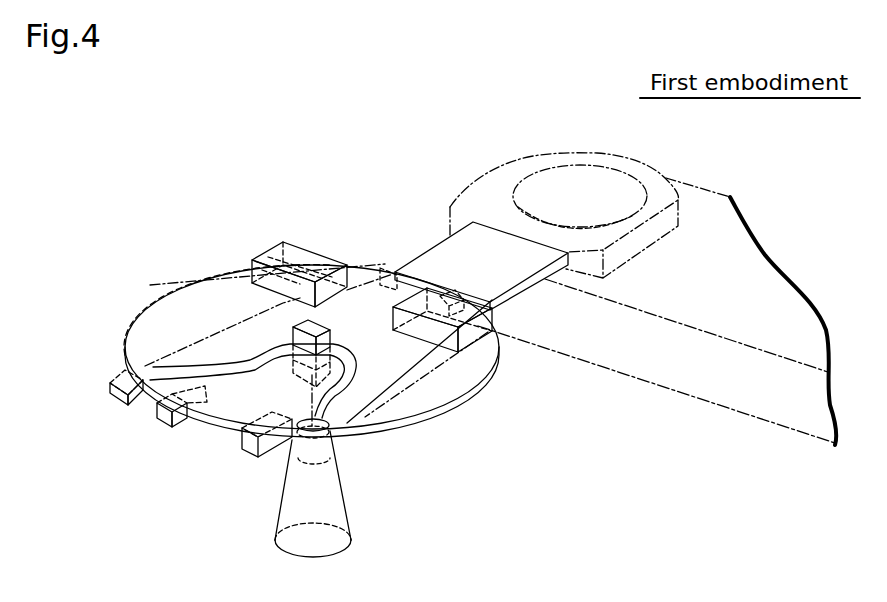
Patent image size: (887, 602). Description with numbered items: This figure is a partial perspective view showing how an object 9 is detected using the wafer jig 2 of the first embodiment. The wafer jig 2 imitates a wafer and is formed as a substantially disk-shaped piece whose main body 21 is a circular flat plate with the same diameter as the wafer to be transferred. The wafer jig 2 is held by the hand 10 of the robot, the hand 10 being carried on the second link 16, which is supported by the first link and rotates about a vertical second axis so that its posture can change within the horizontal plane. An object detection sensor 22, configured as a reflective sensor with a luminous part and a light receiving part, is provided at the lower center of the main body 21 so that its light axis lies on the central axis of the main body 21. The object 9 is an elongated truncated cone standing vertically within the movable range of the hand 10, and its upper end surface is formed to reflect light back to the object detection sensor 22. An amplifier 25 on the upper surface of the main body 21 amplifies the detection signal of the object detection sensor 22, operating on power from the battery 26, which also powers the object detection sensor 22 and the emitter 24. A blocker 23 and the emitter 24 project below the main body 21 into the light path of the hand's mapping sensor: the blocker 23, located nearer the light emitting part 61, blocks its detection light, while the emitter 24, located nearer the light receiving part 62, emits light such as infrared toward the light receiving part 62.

The wafer jig 2 is at (168, 198).
The object 9 is at (330, 507).
The hand 10 is at (393, 263).
The second link 16 is at (755, 420).
The main body 21 is at (177, 313).
The object detection sensor 22 is at (340, 343).
The blocker 23 is at (235, 442).
The emitter 24 is at (153, 415).
The amplifier 25 is at (495, 340).
The battery 26 is at (277, 252).
The light emitting part 61 is at (292, 441).
The light receiving part 62 is at (128, 400).